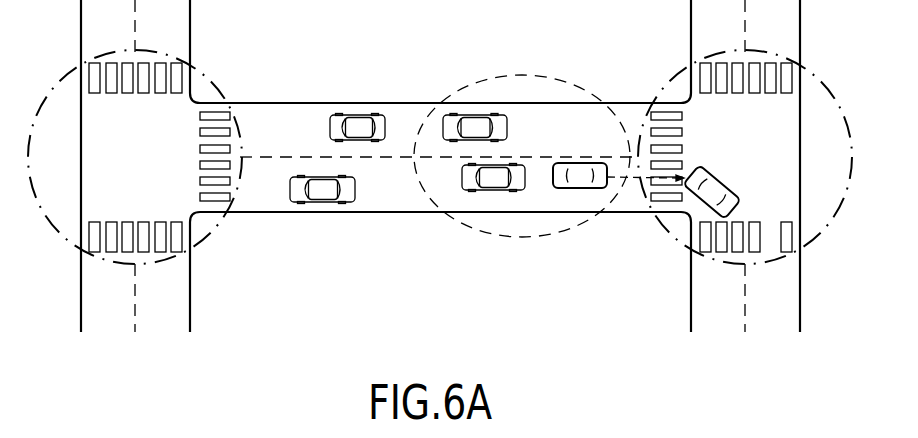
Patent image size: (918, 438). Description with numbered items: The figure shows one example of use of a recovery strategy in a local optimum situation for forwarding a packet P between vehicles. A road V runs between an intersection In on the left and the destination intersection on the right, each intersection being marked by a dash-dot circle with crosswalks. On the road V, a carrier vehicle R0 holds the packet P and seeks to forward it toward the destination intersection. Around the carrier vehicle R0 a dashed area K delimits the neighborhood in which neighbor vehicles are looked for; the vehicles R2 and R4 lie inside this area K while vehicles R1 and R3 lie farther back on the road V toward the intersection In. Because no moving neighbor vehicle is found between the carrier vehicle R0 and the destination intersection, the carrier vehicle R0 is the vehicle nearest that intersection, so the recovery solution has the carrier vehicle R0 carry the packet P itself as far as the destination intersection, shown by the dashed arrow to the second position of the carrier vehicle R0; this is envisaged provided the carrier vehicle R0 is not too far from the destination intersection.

The intersection In is at (214, 77).
The road V is at (305, 103).
The neighborhood area K is at (521, 238).
The carrier vehicle R0 is at (577, 163).
The vehicle R1 is at (347, 195).
The vehicle R2 is at (518, 182).
The vehicle R3 is at (358, 120).
The vehicle R4 is at (505, 130).